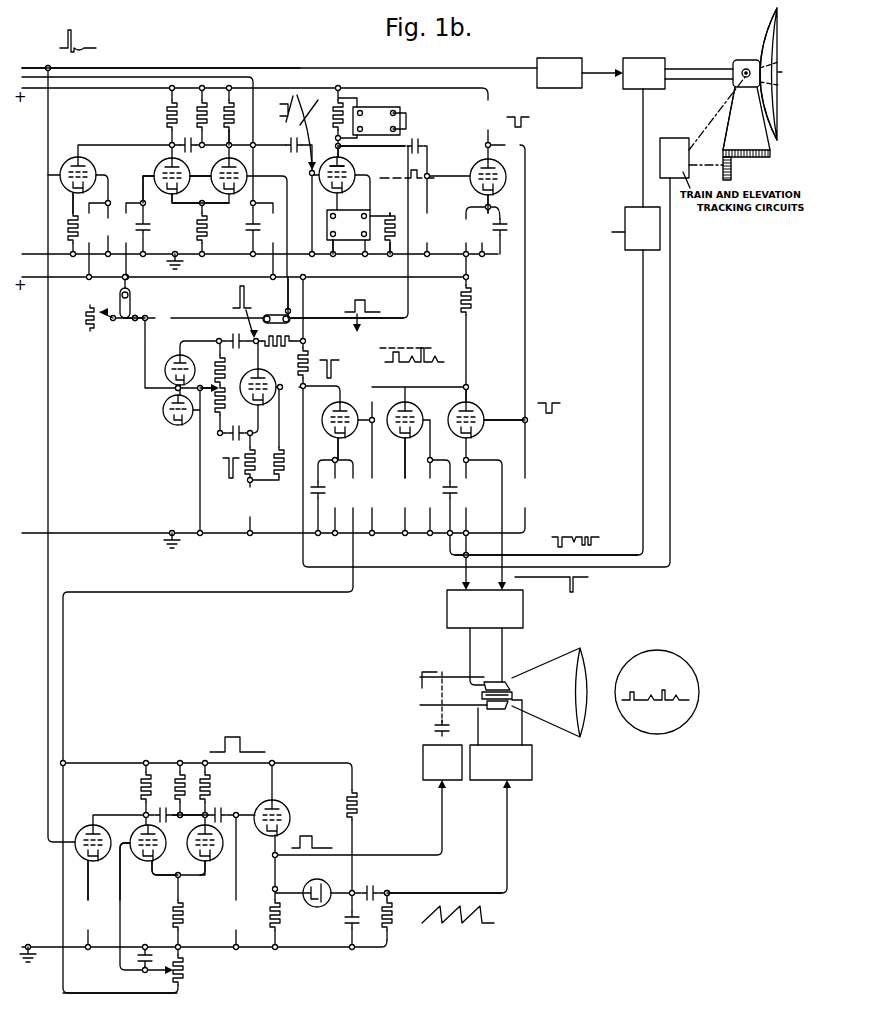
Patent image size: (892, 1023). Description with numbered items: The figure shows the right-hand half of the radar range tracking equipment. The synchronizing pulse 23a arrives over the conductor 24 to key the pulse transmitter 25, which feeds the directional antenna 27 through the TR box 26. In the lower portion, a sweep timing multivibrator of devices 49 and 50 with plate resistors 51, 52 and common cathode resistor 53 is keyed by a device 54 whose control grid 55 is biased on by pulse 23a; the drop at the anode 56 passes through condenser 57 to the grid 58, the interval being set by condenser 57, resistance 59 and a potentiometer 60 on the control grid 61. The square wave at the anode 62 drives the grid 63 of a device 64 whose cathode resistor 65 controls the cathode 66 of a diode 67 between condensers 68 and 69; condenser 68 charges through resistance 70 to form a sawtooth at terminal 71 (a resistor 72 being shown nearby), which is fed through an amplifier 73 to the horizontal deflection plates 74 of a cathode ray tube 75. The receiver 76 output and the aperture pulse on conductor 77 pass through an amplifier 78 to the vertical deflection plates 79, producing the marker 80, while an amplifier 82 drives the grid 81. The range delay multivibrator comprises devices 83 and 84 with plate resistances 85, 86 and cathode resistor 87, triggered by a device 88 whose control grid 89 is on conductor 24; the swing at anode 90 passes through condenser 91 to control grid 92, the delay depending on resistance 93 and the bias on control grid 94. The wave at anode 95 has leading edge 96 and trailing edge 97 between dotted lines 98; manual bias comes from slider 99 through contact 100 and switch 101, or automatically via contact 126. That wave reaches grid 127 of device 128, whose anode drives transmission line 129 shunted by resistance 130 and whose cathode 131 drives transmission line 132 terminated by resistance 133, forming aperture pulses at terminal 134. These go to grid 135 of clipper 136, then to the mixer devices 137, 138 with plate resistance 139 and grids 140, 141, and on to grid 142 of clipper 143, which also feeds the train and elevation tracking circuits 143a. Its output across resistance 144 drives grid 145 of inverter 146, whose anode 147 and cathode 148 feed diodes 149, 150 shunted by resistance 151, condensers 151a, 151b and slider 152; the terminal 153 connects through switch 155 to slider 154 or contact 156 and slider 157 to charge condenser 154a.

The output pulse 23a is at (75, 30).
The conductor 24 is at (172, 66).
The pulse transmitter 25 is at (556, 58).
The Transmit-Receive device (TR box) 26 is at (645, 58).
The directional antenna 27 is at (765, 79).
The device 49 is at (145, 872).
The device 50 is at (212, 866).
The plate resistor 51 is at (141, 779).
The plate resistor 52 is at (210, 779).
The common cathode resistor 53 is at (184, 904).
The device 54 is at (86, 830).
The control grid 55 is at (86, 852).
The anode 56 is at (140, 830).
The condenser 57 is at (163, 807).
The grid 58 is at (190, 855).
The resistance 59 is at (178, 772).
The potentiometer 60 is at (166, 975).
The control grid 61 is at (136, 852).
The anode 62 is at (190, 810).
The grid 63 is at (248, 814).
The device 64 is at (283, 804).
The cathode resistor 65 is at (268, 896).
The cathode 66 is at (307, 905).
The diode 67 is at (322, 905).
The condenser 68 is at (358, 920).
The condenser 69 is at (370, 886).
The resistance 70 is at (358, 804).
The terminal 71 is at (390, 890).
The resistor 72 is at (390, 940).
The amplifier 73 is at (520, 780).
The horizontal deflection plates 74 is at (512, 684).
The cathode ray tube 75 is at (530, 675).
The receiver 76 is at (625, 232).
The conductor 77 is at (508, 548).
The amplifier 78 is at (523, 610).
The vertical deflection plates 79 is at (509, 724).
The marker 80 is at (668, 690).
The grid 81 is at (438, 676).
The amplifier 82 is at (428, 780).
The device 83 is at (170, 203).
The device 84 is at (246, 208).
The plate resistance 85 is at (167, 109).
The plate resistance 86 is at (232, 122).
The common cathode resistor 87 is at (208, 230).
The device 88 is at (95, 163).
The control grid 89 is at (69, 186).
The anode 90 is at (160, 160).
The condenser 91 is at (188, 137).
The control grid 92 is at (200, 180).
The resistance 93 is at (200, 108).
The control grid 94 is at (150, 188).
The anode 95 is at (243, 164).
The leading edge 96 is at (276, 108).
The trailing edge 97 is at (298, 117).
The dotted lines 98 is at (297, 95).
The slider 99 is at (93, 332).
The contact 100 is at (110, 312).
The switch 101 is at (130, 297).
The contact 126 is at (130, 327).
The grid 127 is at (352, 183).
The device 128 is at (345, 162).
The transmission line 129 is at (393, 104).
The resistance 130 is at (336, 100).
The cathode 131 is at (349, 200).
The transmission line 132 is at (348, 250).
The resistance 133 is at (388, 248).
The terminal 134 is at (345, 141).
The grid 135 is at (480, 190).
The clipper 136 is at (474, 164).
The device 137 is at (480, 406).
The device 138 is at (426, 400).
The plate resistance 139 is at (471, 310).
The grid 140 is at (480, 428).
The grid 141 is at (412, 436).
The grid 142 is at (346, 434).
The clipper 143 is at (330, 406).
The train and elevation tracking circuits 143a is at (676, 138).
The resistance 144 is at (297, 366).
The grid 145 is at (272, 440).
The inverter 146 is at (244, 377).
The anode 147 is at (276, 348).
The cathode 148 is at (244, 440).
The diode 149 is at (168, 360).
The diode 150 is at (168, 420).
The resistance 151 is at (214, 365).
The condenser 151a is at (234, 338).
The condenser 151b is at (250, 433).
The slider 152 is at (206, 380).
The terminal 153 is at (172, 388).
The slider 154 is at (394, 226).
The condenser 154a is at (150, 230).
The switch 155 is at (272, 315).
The contact 156 is at (291, 311).
The slider 157 is at (232, 112).